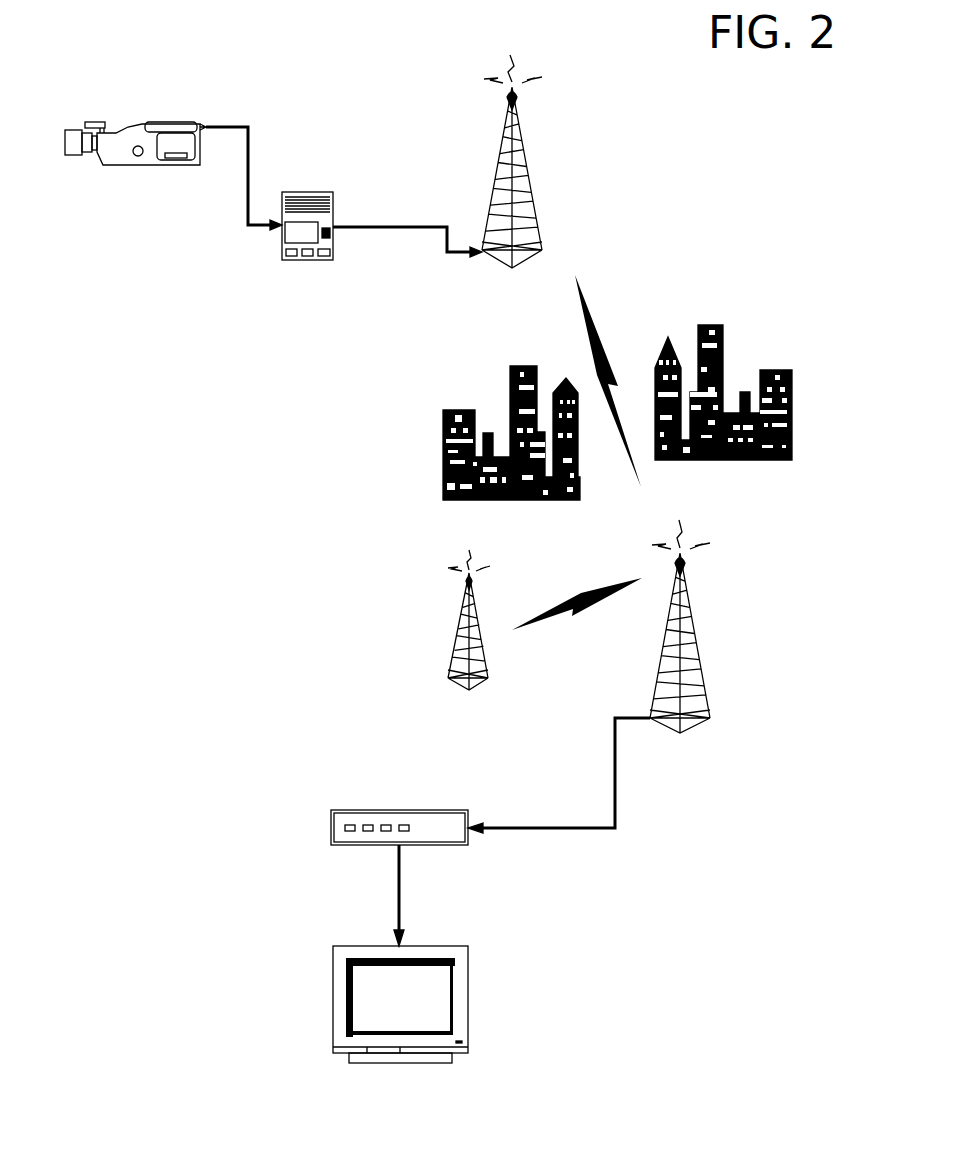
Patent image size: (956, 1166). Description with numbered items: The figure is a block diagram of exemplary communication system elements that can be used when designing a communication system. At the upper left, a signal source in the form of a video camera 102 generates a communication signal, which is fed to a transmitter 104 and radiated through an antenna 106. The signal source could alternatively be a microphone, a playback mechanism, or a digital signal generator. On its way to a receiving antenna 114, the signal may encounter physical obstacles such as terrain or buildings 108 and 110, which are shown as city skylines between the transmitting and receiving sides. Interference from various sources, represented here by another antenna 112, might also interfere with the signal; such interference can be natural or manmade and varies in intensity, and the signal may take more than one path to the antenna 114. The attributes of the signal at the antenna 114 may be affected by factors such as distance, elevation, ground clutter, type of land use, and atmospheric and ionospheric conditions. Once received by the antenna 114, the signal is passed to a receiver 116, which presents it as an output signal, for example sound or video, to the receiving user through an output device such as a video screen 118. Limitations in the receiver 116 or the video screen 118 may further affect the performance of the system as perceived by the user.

The video camera 102 is at (170, 120).
The transmitter 104 is at (293, 192).
The antenna 106 is at (523, 192).
The building 108 is at (443, 463).
The building 110 is at (792, 433).
The another antenna 112 is at (452, 665).
The receiving antenna 114 is at (695, 647).
The receiver 116 is at (345, 810).
The video screen 118 is at (333, 978).